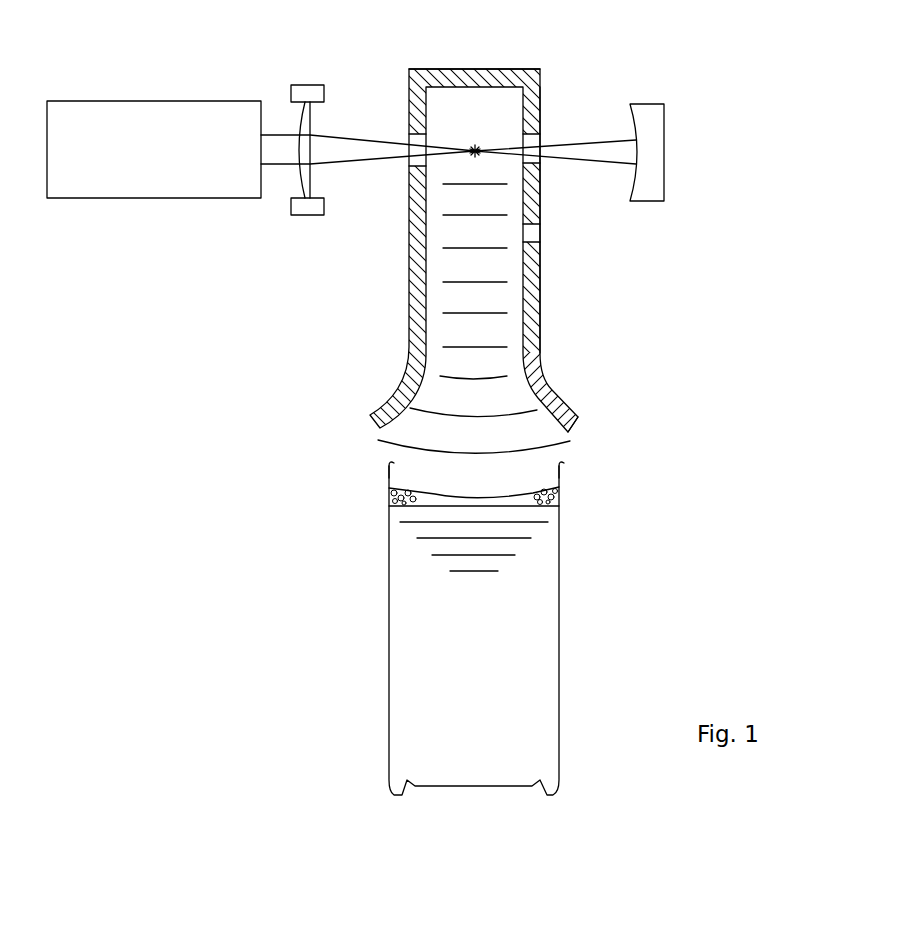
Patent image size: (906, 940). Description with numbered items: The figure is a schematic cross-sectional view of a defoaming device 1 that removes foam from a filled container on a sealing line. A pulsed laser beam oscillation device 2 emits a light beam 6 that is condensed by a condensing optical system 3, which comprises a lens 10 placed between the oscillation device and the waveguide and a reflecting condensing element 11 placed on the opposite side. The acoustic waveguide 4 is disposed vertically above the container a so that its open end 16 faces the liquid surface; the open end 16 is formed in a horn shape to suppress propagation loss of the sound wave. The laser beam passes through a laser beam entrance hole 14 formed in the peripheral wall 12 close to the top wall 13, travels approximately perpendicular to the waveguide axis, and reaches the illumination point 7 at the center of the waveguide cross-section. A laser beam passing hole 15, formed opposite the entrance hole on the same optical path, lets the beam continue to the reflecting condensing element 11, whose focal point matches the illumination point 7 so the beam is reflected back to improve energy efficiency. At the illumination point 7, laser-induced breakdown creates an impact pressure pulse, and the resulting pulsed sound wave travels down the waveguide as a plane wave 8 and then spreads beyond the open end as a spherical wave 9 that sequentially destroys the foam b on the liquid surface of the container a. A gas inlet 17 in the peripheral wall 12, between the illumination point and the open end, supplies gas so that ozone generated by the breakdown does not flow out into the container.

The defoaming device 1 is at (559, 67).
The pulsed laser beam oscillation device 2 is at (103, 99).
The condensing optical system 3 is at (309, 84).
The acoustic waveguide 4 is at (407, 264).
The light beam 6 is at (278, 168).
The illumination point 7 is at (479, 145).
The plane wave 8 is at (487, 282).
The spherical wave 9 is at (435, 493).
The lens 10 is at (313, 178).
The reflecting condensing element 11 is at (665, 158).
The peripheral wall 12 is at (541, 197).
The top wall 13 is at (467, 69).
The laser beam entrance hole 14 is at (410, 135).
The laser beam passing hole 15 is at (537, 138).
The open end 16 is at (578, 425).
The gas inlet 17 is at (541, 236).
The container a is at (389, 610).
The foam b is at (556, 498).